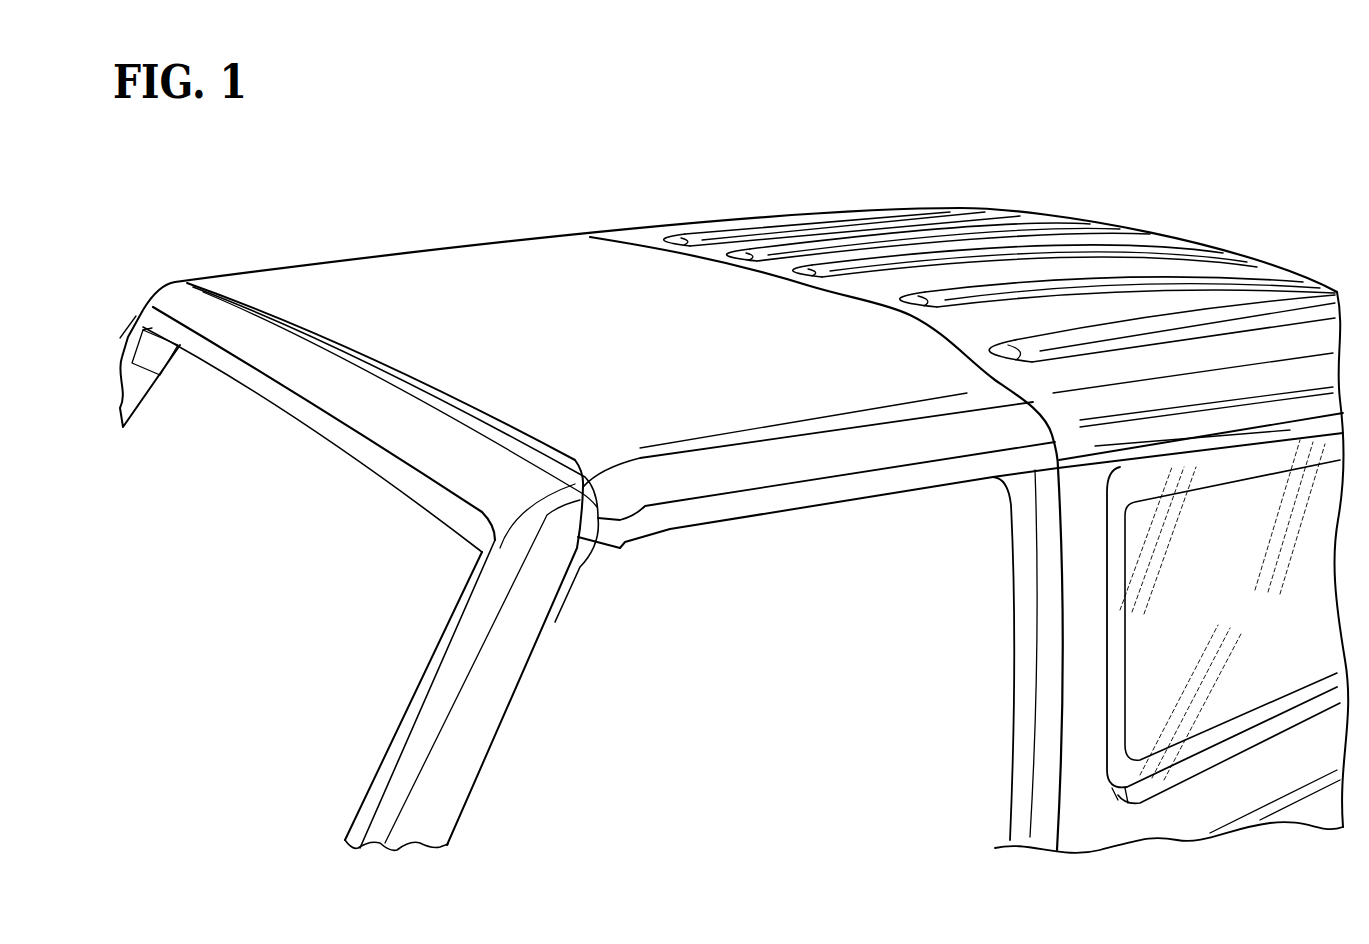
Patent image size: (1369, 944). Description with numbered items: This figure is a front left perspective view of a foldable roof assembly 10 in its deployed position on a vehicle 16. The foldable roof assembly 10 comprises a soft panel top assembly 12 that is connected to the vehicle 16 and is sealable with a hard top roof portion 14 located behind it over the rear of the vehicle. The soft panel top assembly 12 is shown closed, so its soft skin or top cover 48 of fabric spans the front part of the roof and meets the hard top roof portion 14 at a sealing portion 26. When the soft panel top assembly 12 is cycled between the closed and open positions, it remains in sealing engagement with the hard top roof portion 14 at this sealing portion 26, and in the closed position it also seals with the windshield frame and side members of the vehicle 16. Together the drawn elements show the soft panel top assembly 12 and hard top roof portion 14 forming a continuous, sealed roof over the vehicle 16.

The foldable roof assembly 10 is at (391, 149).
The soft panel top assembly 12 is at (282, 255).
The hard top roof portion 14 is at (859, 208).
The vehicle 16 is at (353, 512).
The sealing portion 26 is at (576, 227).
The top cover 48 is at (472, 280).